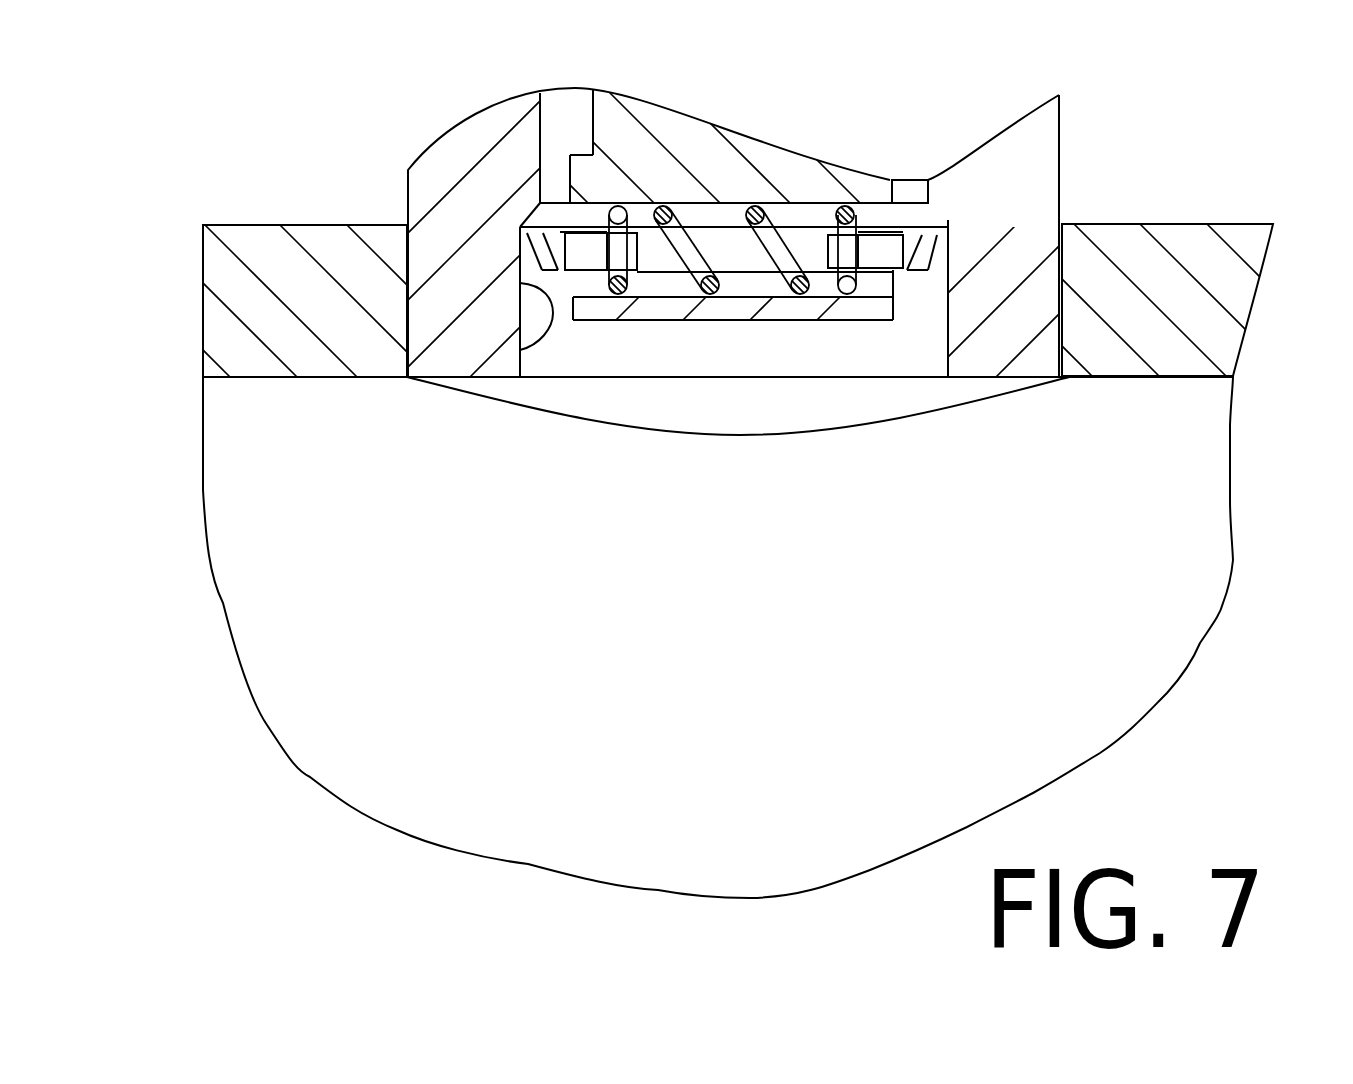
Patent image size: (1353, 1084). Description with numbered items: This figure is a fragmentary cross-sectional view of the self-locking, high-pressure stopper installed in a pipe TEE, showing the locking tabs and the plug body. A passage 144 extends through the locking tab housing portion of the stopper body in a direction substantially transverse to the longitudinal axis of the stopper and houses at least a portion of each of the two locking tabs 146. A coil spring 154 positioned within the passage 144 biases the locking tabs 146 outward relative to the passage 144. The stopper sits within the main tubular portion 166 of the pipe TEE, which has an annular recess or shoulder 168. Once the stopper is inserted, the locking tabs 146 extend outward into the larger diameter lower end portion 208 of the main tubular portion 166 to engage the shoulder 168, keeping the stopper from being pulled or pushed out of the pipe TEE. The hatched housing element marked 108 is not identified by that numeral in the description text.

The housing 108 is at (1113, 285).
The passage 144 is at (723, 248).
The locking tabs 146 is at (568, 255).
The coil spring 154 is at (687, 247).
The main tubular portion 166 is at (463, 212).
The annular shoulder 168 is at (923, 215).
The larger diameter lower end portion 208 is at (520, 350).